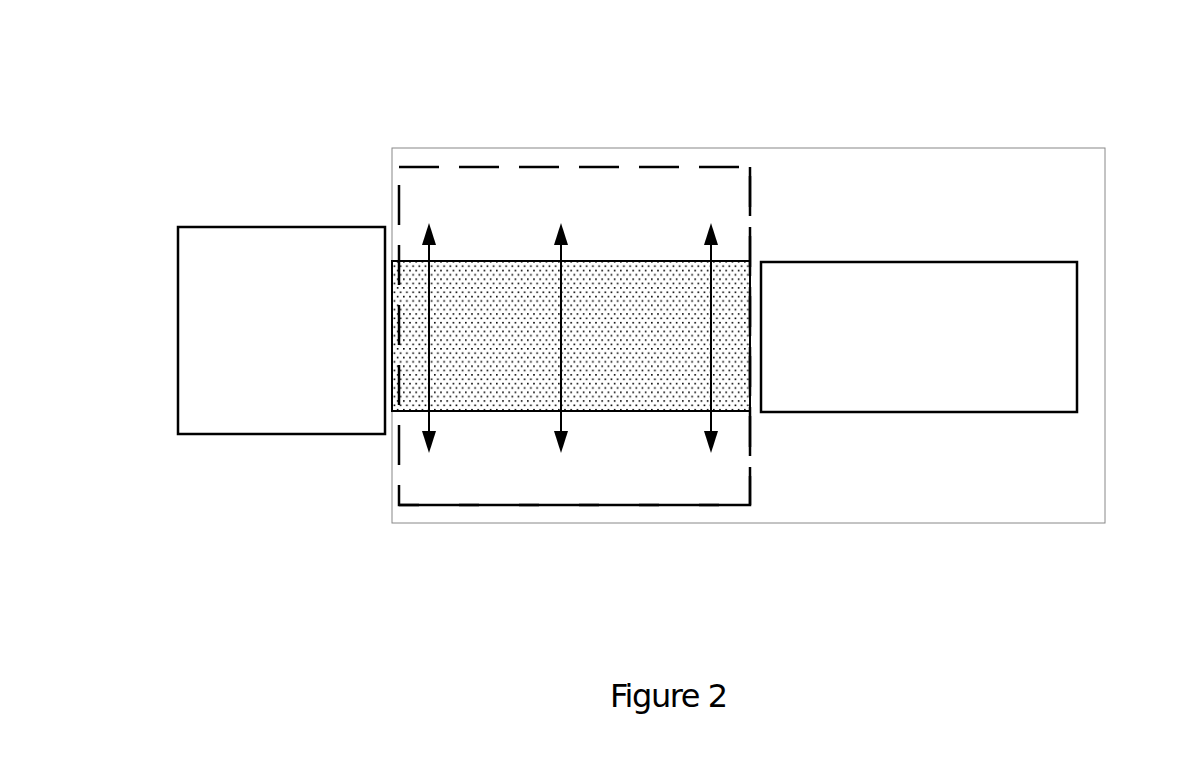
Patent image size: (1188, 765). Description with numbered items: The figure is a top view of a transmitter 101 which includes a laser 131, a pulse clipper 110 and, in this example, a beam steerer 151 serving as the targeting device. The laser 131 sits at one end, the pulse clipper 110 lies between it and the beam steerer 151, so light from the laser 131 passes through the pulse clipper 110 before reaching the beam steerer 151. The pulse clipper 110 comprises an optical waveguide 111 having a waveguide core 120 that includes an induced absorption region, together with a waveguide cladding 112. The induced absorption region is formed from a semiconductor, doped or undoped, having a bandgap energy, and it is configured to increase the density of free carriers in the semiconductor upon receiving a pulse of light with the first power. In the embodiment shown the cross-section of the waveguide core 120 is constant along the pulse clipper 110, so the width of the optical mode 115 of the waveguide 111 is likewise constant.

The transmitter 101 is at (1035, 482).
The pulse clipper 110 is at (523, 98).
The optical waveguide 111 is at (672, 507).
The waveguide cladding 112 is at (710, 468).
The optical mode 115 is at (558, 440).
The waveguide core 120 is at (598, 373).
The laser 131 is at (185, 422).
The beam steerer 151 is at (1048, 337).